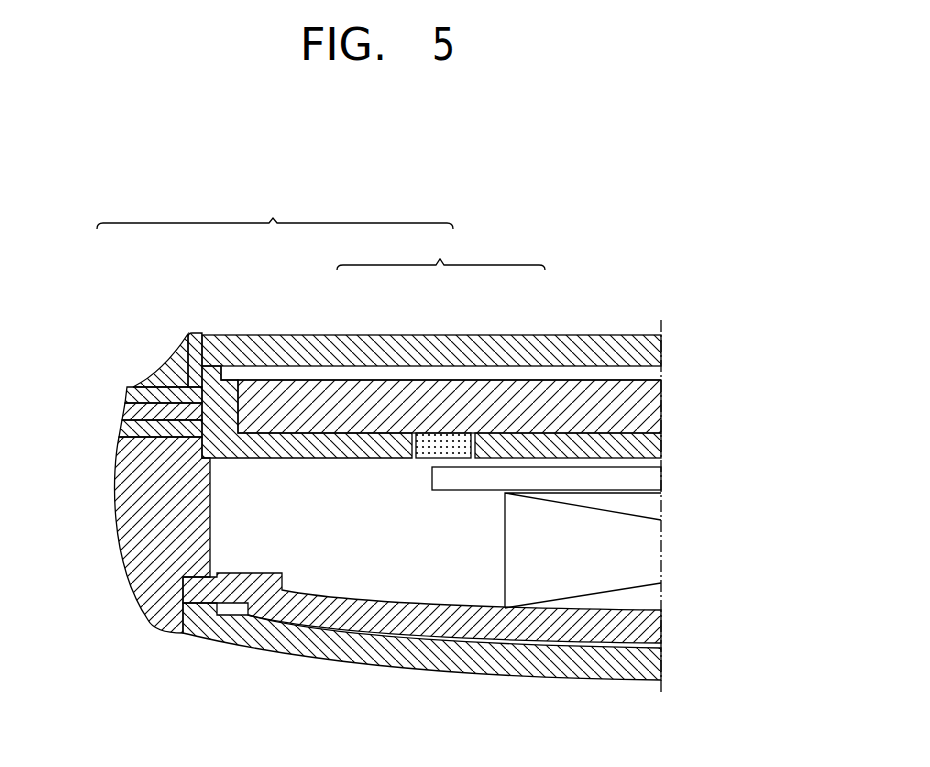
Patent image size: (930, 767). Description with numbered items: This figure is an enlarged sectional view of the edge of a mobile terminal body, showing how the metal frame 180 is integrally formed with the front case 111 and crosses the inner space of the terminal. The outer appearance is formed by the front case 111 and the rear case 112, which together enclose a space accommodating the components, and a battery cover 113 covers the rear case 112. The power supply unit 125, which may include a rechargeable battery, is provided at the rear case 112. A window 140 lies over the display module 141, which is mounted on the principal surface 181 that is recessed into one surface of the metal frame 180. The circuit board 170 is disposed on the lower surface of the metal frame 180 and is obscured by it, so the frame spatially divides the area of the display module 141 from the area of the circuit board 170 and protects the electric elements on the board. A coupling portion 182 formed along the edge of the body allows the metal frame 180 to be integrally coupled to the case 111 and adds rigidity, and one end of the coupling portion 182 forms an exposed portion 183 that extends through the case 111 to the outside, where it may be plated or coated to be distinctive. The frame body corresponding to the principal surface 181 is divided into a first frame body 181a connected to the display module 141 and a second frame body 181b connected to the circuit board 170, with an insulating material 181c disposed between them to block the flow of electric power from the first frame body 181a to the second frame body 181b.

The front case 111 is at (130, 512).
The rear case 112 is at (653, 625).
The battery cover 113 is at (653, 668).
The power supply unit 125 is at (655, 537).
The window 140 is at (655, 352).
The display module 141 is at (655, 407).
The circuit board 170 is at (655, 473).
The metal frame 180 is at (275, 211).
The principal surface 181 is at (441, 252).
The first frame body 181a is at (352, 445).
The second frame body 181b is at (528, 447).
The insulating material 181c is at (445, 452).
The coupling portion 182 is at (186, 384).
The exposed portion 183 is at (130, 388).